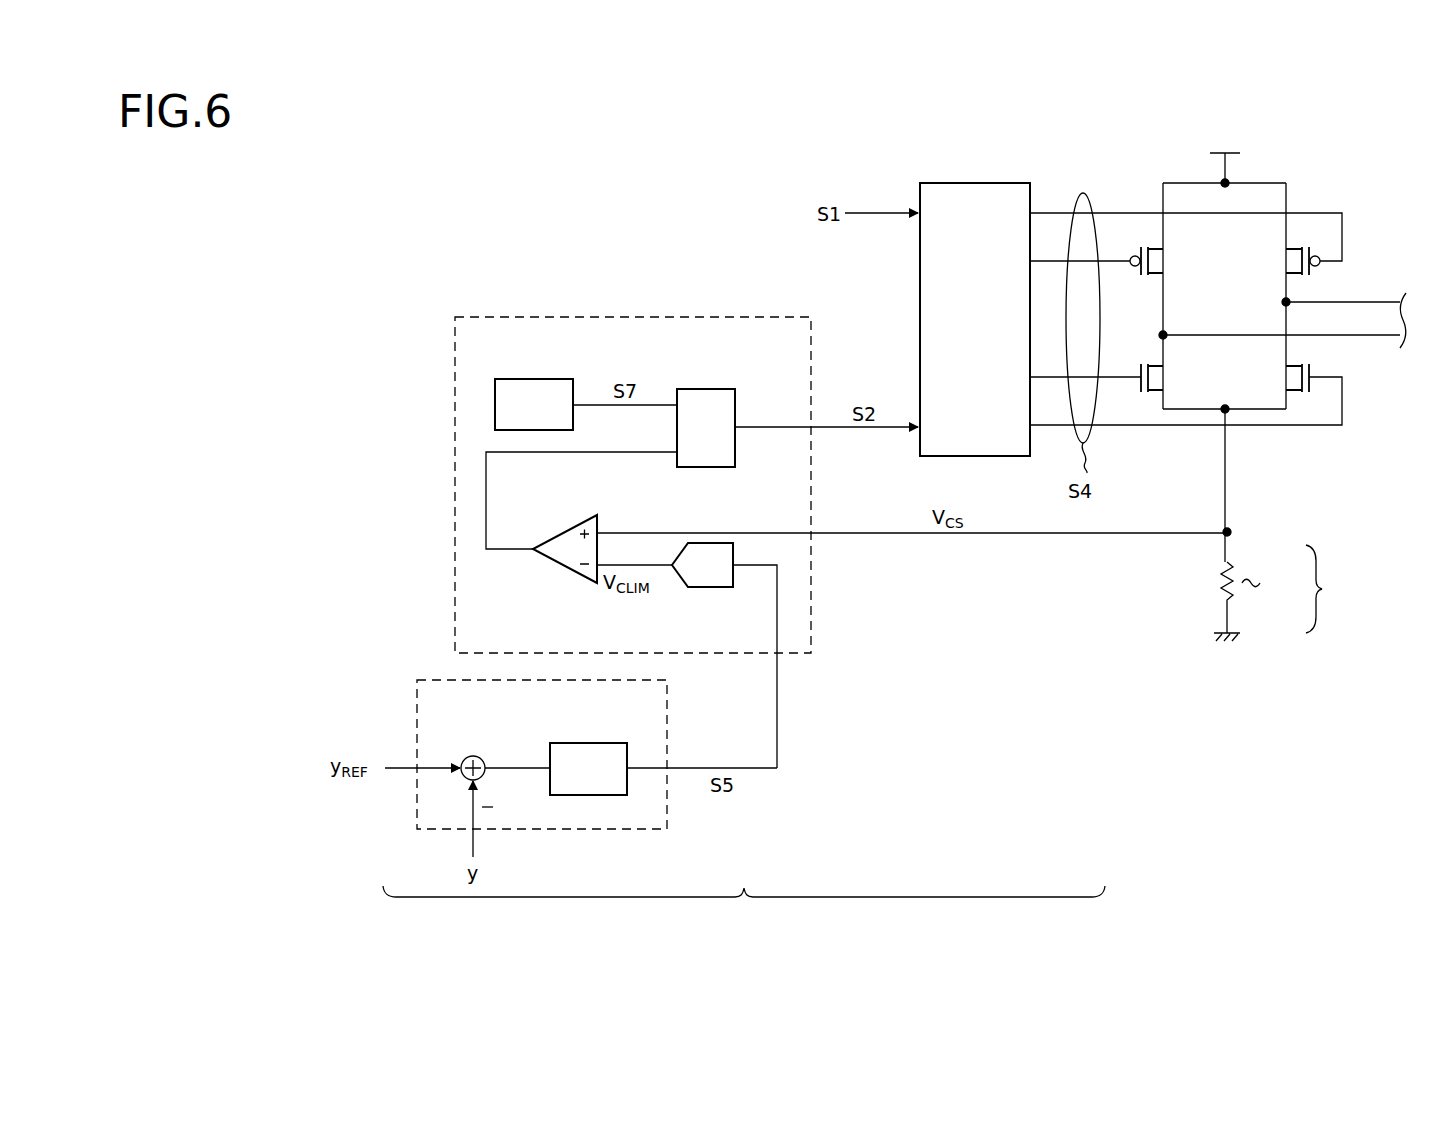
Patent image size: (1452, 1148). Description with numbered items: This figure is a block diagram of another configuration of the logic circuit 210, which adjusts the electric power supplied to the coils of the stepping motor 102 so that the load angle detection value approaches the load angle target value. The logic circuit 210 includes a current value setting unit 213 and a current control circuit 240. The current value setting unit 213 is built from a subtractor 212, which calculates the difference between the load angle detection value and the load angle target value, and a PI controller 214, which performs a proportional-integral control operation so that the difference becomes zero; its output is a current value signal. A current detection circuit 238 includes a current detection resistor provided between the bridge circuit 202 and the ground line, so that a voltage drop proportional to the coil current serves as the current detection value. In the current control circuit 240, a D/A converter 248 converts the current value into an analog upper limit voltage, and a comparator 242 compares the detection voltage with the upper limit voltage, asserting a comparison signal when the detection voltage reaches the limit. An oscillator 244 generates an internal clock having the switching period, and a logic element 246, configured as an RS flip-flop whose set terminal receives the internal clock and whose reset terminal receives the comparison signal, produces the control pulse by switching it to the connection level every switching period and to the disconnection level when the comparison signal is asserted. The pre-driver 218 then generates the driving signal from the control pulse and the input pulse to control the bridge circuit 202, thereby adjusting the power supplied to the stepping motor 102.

The stepping motor 102 is at (1304, 320).
The bridge circuit 202 is at (1320, 152).
The logic circuit 210 is at (744, 910).
The subtractor 212 is at (480, 757).
The current value setting unit 213 is at (576, 829).
The PI controller 214 is at (591, 743).
The pre-driver 218 is at (966, 183).
The current detection circuit 238 is at (1289, 593).
The current control circuit 240 is at (662, 317).
The comparator 242 is at (560, 567).
The oscillator 244 is at (526, 379).
The logic element 246 is at (705, 389).
The D/A converter 248 is at (708, 587).